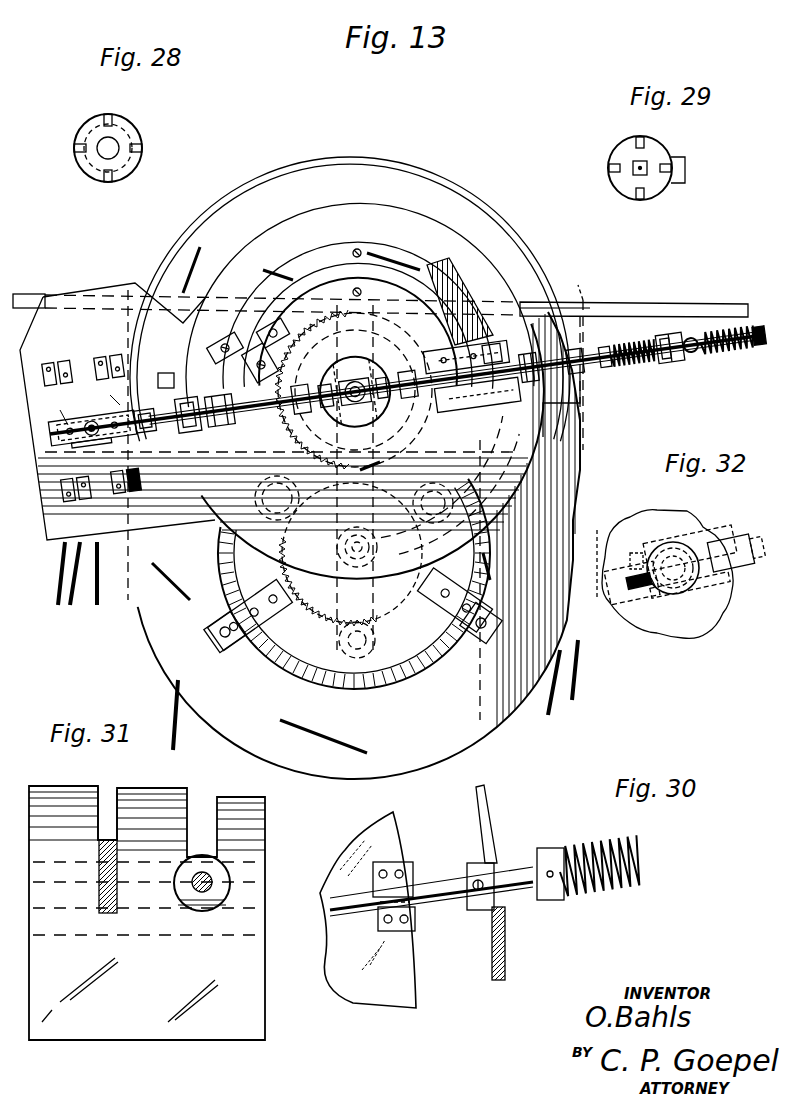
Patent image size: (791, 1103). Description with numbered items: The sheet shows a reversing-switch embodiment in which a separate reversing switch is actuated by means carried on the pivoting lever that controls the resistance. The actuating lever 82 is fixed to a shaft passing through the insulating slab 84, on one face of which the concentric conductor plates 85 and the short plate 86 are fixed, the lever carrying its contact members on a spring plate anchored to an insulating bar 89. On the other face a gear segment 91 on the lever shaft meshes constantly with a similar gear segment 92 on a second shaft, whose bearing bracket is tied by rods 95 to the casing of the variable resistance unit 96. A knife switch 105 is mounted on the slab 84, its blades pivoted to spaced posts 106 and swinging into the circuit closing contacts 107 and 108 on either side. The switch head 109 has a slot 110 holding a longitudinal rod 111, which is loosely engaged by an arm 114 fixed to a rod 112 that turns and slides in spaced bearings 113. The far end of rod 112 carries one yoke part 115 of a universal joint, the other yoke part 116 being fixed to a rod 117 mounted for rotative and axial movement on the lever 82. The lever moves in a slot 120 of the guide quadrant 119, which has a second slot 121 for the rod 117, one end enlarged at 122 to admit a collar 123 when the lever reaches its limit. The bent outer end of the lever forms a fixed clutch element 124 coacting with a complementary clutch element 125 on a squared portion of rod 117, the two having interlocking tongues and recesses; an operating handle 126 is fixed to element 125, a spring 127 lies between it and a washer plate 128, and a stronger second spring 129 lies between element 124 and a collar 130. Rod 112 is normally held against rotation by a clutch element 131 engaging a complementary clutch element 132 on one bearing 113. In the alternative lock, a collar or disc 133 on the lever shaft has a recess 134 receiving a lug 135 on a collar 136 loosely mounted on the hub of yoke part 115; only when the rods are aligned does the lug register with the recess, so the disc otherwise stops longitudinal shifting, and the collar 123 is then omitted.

In FIG. 13, the actuating lever 82 is at (560, 370).
In FIG. 31, the actuating lever 82 is at (99, 872).
In FIG. 13, the insulating slab 84 is at (296, 226).
In FIG. 32, the insulating slab 84 is at (702, 628).
In FIG. 30, the insulating slab 84 is at (404, 998).
In FIG. 13, the concentric conductor plates 85 is at (430, 300).
In FIG. 13, the short plate 86 is at (236, 358).
In FIG. 13, the insulating bar 89 is at (470, 398).
In FIG. 13, the gear segment 91 is at (275, 410).
In FIG. 13, the gear segment 92 is at (252, 643).
In FIG. 13, the rods 95 is at (212, 625).
In FIG. 13, the variable resistance unit 96 is at (570, 510).
In FIG. 13, the knife switch 105 is at (58, 438).
In FIG. 13, the spaced posts 106 is at (92, 445).
In FIG. 13, the circuit closing contacts 107 is at (110, 490).
In FIG. 13, the circuit closing contacts 108 is at (105, 358).
In FIG. 13, the switch head 109 is at (60, 418).
In FIG. 13, the slot 110 is at (120, 378).
In FIG. 13, the rod 111 is at (142, 410).
In FIG. 13, the rod 112 is at (292, 415).
In FIG. 32, the rod 112 is at (599, 558).
In FIG. 13, the spaced bearings 113 is at (255, 420).
In FIG. 13, the arm 114 is at (186, 428).
In FIG. 13, the yoke part 115 is at (335, 380).
In FIG. 32, the yoke part 115 is at (676, 600).
In FIG. 13, the yoke part 116 is at (368, 386).
In FIG. 32, the yoke part 116 is at (724, 592).
In FIG. 13, the rod 117 is at (602, 395).
In FIG. 32, the rod 117 is at (740, 545).
In FIG. 31, the rod 117 is at (218, 902).
In FIG. 30, the rod 117 is at (508, 894).
In FIG. 13, the guide quadrant 119 is at (533, 268).
In FIG. 31, the guide quadrant 119 is at (38, 787).
In FIG. 30, the guide quadrant 119 is at (505, 958).
In FIG. 31, the slot 120 is at (117, 800).
In FIG. 31, the second slot 121 is at (206, 827).
In FIG. 30, the second slot 121 is at (490, 843).
In FIG. 13, the enlarged slot end 122 is at (575, 284).
In FIG. 31, the enlarged slot end 122 is at (236, 872).
In FIG. 30, the enlarged slot end 122 is at (470, 862).
In FIG. 13, the collar 123 is at (560, 365).
In FIG. 31, the collar 123 is at (212, 888).
In FIG. 30, the collar 123 is at (472, 906).
In FIG. 13, the fixed clutch element 124 is at (662, 362).
In FIG. 28, the fixed clutch element 124 is at (133, 137).
In FIG. 13, the complementary clutch element 125 is at (677, 362).
In FIG. 29, the complementary clutch element 125 is at (658, 152).
In FIG. 13, the operating handle 126 is at (693, 336).
In FIG. 29, the operating handle 126 is at (683, 183).
In FIG. 13, the spring 127 is at (738, 355).
In FIG. 13, the washer plate 128 is at (757, 343).
In FIG. 13, the second spring 129 is at (640, 340).
In FIG. 30, the second spring 129 is at (594, 889).
In FIG. 13, the collar 130 is at (607, 345).
In FIG. 30, the collar 130 is at (553, 900).
In FIG. 13, the clutch element 131 is at (248, 372).
In FIG. 13, the complementary clutch element 132 is at (185, 390).
In FIG. 32, the collar or disc 133 is at (692, 545).
In FIG. 32, the notch or recess 134 is at (656, 598).
In FIG. 32, the lug 135 is at (632, 565).
In FIG. 32, the collar 136 is at (612, 622).